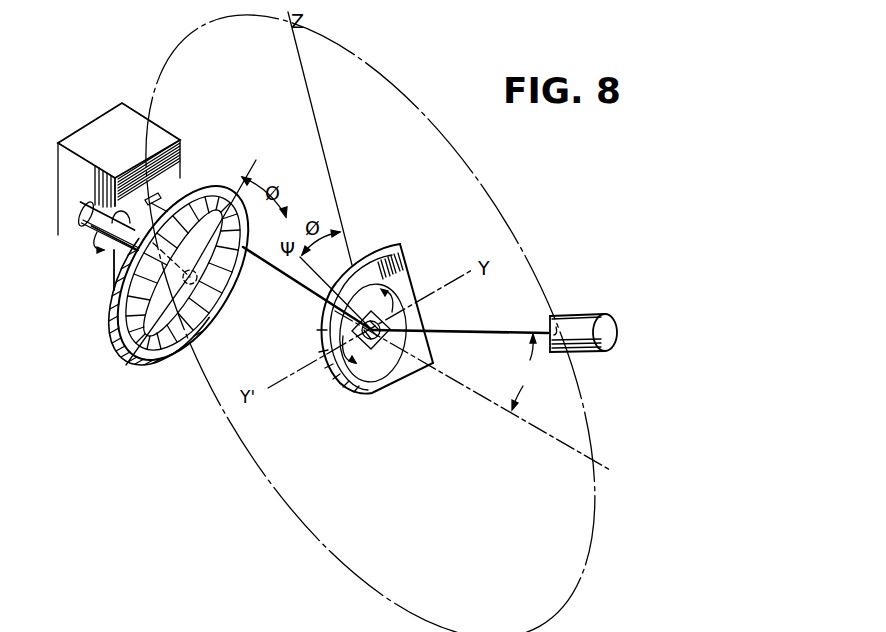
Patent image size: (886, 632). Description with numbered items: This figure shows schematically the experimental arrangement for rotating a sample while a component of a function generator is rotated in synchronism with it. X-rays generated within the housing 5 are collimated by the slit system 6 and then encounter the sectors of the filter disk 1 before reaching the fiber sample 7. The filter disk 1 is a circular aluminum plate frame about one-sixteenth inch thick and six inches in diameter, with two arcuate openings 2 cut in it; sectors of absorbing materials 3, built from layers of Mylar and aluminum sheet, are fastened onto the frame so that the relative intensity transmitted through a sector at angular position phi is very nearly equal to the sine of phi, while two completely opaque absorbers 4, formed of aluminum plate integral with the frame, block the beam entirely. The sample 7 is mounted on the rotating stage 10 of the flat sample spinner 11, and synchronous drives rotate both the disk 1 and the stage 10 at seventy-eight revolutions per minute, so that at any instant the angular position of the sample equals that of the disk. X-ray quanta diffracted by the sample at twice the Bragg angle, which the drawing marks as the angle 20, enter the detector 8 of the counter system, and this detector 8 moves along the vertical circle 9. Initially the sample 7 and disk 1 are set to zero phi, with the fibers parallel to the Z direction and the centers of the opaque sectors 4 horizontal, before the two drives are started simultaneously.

The filter disk 1 is at (220, 323).
The arcuate openings 2 is at (288, 216).
The absorbing materials 3 is at (182, 340).
The opaque absorbers 4 is at (238, 190).
The housing 5 is at (72, 163).
The slit system 6 is at (158, 197).
The fiber sample 7 is at (364, 340).
The detector 8 is at (586, 322).
The vertical circle 9 is at (500, 215).
The rotating stage 10 is at (363, 392).
The flat sample spinner 11 is at (351, 391).
The angle 20 is at (472, 390).